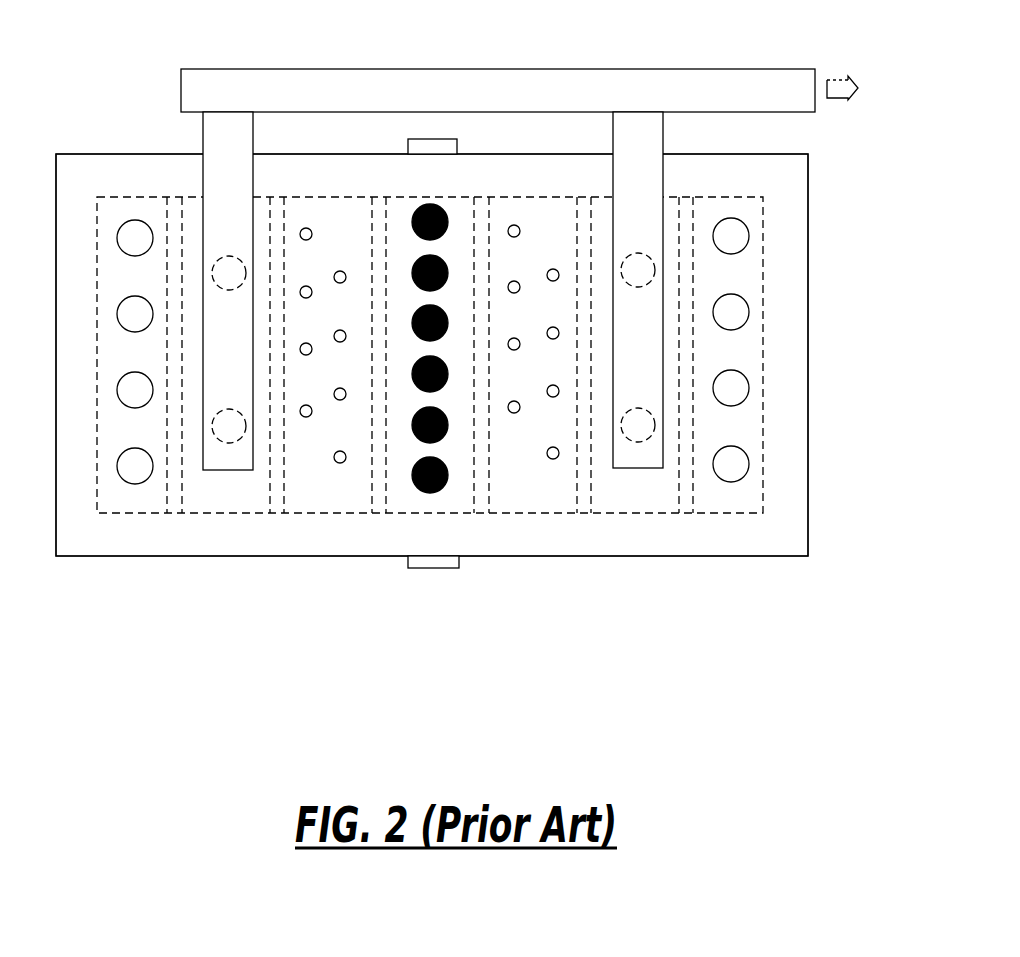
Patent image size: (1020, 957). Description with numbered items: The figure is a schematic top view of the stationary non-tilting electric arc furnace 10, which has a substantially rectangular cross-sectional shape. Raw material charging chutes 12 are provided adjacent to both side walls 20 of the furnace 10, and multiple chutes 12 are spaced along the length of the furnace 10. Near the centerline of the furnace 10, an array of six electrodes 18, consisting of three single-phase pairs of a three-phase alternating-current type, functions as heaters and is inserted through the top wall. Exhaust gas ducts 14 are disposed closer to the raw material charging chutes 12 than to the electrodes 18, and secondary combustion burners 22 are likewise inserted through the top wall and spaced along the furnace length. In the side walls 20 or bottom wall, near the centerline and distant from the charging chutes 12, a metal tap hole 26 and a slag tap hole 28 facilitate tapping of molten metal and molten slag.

The furnace 10 is at (815, 165).
The raw material charging chutes 12 is at (142, 484).
The exhaust gas ducts 14 is at (228, 447).
The electrodes 18 is at (428, 391).
The side walls 20 is at (53, 200).
The secondary combustion burners 22 is at (316, 275).
The metal tap hole 26 is at (438, 568).
The slag tap hole 28 is at (438, 137).